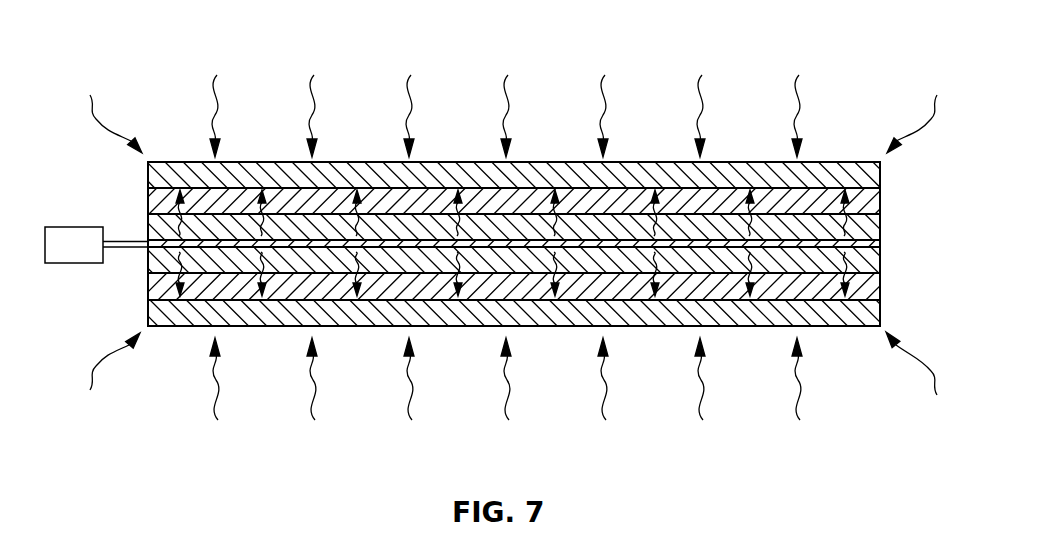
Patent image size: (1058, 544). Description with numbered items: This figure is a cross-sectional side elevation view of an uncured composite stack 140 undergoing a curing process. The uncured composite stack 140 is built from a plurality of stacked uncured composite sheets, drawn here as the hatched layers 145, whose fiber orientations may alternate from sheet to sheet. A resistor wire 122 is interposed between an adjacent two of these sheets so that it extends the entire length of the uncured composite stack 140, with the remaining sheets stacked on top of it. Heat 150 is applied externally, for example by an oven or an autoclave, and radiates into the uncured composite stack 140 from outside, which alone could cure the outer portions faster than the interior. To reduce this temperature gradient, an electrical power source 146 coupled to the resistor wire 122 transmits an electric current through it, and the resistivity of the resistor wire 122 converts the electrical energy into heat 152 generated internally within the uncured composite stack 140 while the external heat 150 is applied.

The resistor wire 122 is at (631, 242).
The uncured composite stack 140 is at (895, 162).
The layer 145 is at (148, 177).
The electrical power source 146 is at (96, 245).
The heat 150 is at (812, 95).
The heat 152 is at (763, 219).